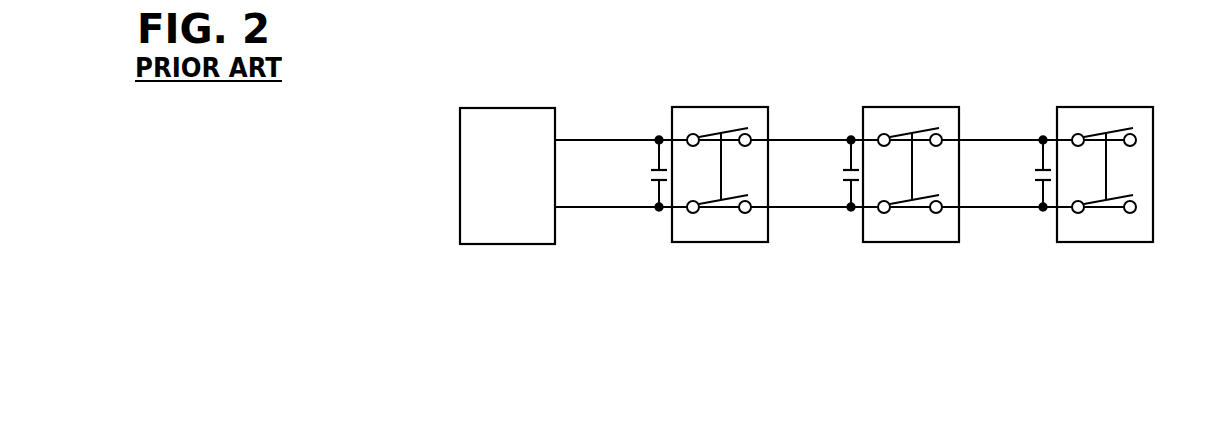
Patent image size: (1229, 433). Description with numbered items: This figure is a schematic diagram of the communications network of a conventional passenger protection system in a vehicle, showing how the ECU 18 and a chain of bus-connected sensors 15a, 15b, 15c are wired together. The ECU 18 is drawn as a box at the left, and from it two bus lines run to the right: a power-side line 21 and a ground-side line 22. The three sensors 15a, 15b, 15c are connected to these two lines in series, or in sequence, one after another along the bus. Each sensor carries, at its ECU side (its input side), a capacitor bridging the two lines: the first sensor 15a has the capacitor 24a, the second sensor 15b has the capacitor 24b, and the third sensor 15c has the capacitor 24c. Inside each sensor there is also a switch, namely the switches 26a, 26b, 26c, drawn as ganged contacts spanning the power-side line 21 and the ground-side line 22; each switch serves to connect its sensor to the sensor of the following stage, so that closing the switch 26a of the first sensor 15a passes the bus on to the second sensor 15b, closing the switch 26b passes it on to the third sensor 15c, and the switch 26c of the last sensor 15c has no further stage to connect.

The ECU 18 is at (492, 107).
The power-side line 21 is at (571, 140).
The ground-side line 22 is at (578, 209).
The capacitor 24a is at (651, 182).
The capacitor 24b is at (818, 222).
The capacitor 24c is at (1010, 222).
The sensor 15a is at (751, 143).
The sensor 15b is at (943, 143).
The sensor 15c is at (1136, 143).
The switch 26a is at (728, 127).
The switch 26b is at (901, 124).
The switch 26c is at (1095, 124).